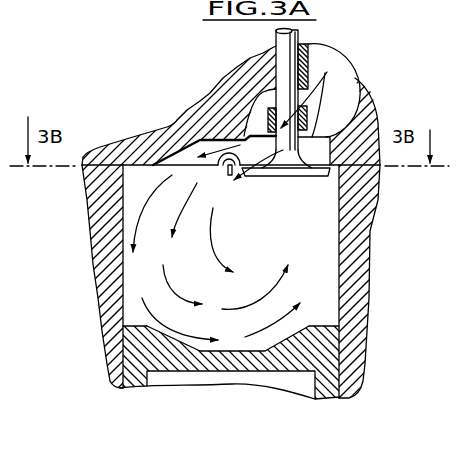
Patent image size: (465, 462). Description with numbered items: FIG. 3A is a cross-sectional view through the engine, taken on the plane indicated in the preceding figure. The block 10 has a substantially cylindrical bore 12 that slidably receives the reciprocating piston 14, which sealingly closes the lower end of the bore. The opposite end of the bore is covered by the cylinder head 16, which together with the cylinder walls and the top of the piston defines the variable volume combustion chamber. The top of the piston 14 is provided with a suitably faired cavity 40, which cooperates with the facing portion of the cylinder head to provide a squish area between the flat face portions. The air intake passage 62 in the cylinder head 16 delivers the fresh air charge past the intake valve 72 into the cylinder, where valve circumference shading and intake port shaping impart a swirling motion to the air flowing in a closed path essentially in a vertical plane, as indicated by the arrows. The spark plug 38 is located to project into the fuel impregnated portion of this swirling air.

The block 10 is at (107, 276).
The cylindrical bore 12 is at (338, 243).
The piston 14 is at (328, 360).
The cylinder head 16 is at (204, 92).
The spark plug 38 is at (227, 168).
The faired cavity 40 is at (279, 342).
The air intake passage 62 is at (333, 83).
The intake valve 72 is at (287, 177).